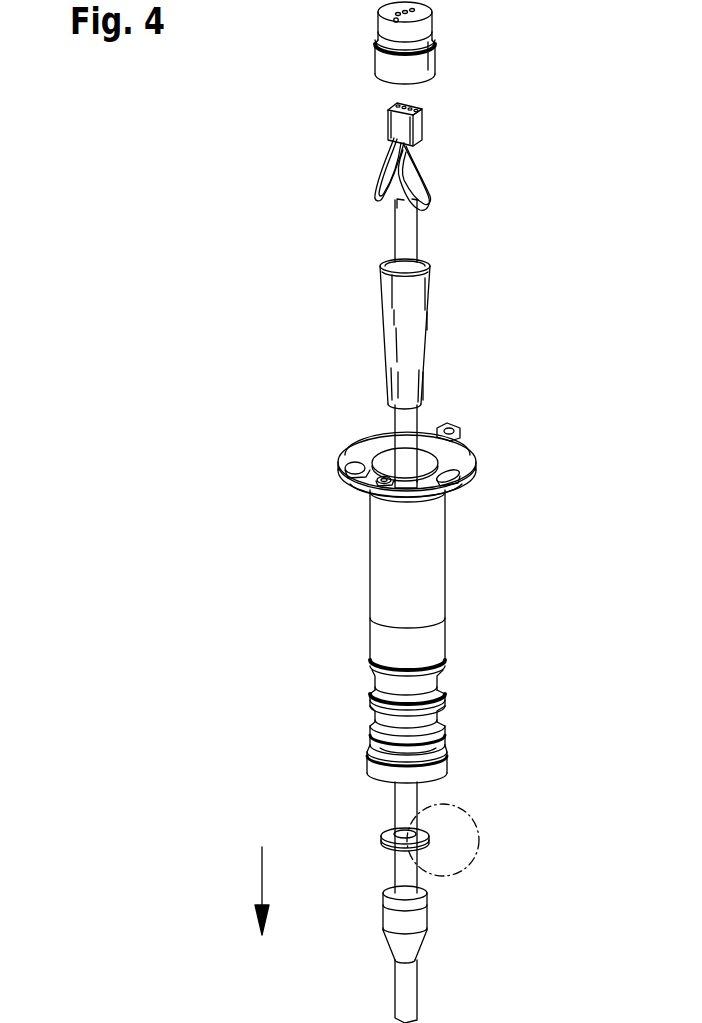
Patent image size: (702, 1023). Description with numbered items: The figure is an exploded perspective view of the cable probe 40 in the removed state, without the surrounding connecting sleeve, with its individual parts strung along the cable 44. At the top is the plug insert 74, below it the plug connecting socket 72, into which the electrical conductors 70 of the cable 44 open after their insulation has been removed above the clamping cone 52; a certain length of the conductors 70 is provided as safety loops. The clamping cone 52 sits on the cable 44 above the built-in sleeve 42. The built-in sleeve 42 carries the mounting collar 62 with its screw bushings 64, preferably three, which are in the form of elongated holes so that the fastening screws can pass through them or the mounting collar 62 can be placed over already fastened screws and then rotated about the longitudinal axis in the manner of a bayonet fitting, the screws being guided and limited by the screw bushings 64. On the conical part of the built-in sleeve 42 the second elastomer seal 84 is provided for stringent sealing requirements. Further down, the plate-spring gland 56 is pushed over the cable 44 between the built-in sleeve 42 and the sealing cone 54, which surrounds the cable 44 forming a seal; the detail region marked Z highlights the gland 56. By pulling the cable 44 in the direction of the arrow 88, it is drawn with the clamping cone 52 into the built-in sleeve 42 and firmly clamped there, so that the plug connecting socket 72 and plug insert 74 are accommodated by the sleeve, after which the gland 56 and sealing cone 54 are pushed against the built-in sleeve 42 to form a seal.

The cable probe 40 is at (466, 300).
The built-in sleeve 42 is at (415, 585).
The cable 44 is at (405, 243).
The clamping cone 52 is at (410, 337).
The sealing cone 54 is at (412, 920).
The plate-spring gland 56 is at (374, 833).
The mounting collar 62 is at (360, 497).
The screw bushings 64 is at (353, 468).
The electrical conductors 70 is at (430, 193).
The plug connecting socket 72 is at (422, 128).
The plug insert 74 is at (405, 68).
The second elastomer seal 84 is at (447, 748).
The arrow 88 is at (262, 870).
The detail region Z is at (479, 824).